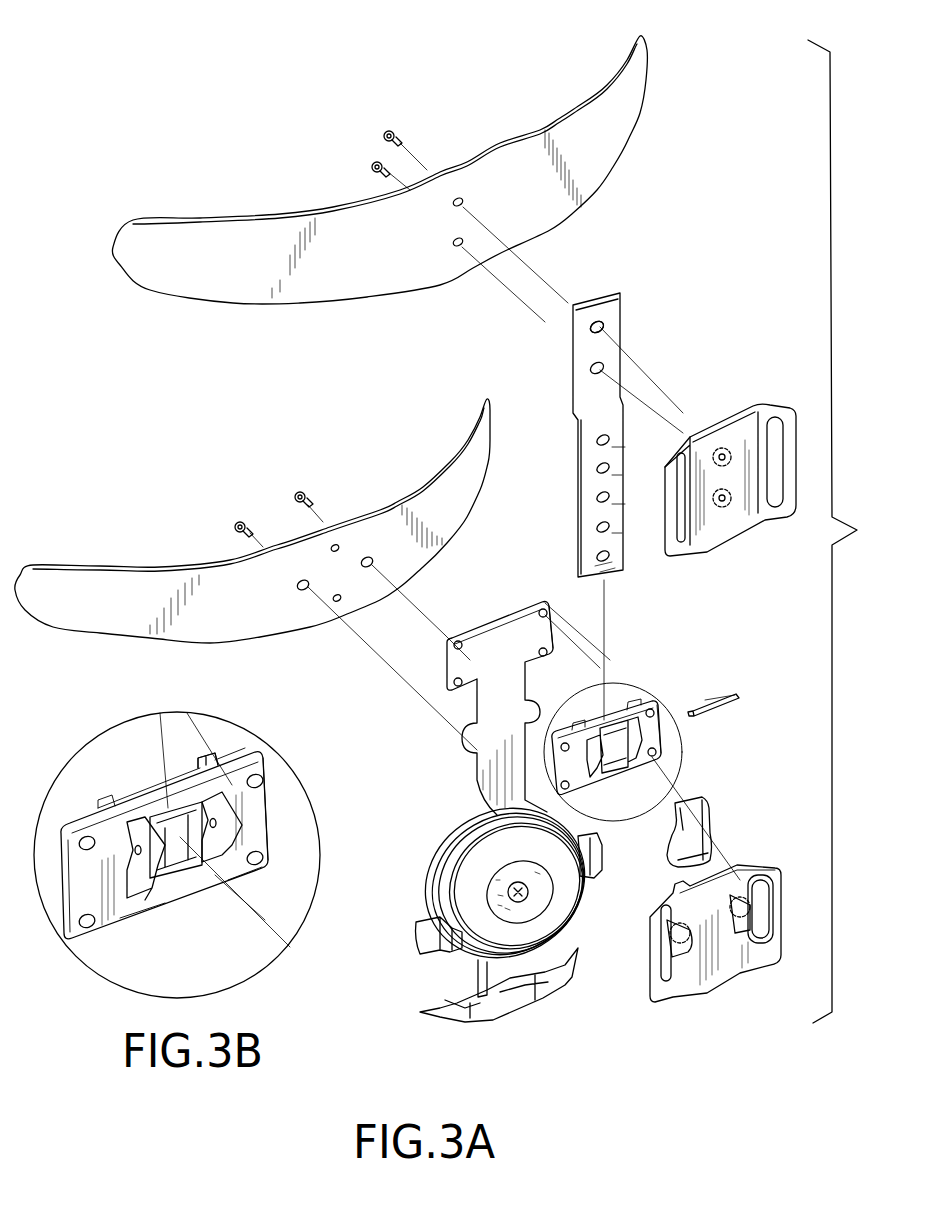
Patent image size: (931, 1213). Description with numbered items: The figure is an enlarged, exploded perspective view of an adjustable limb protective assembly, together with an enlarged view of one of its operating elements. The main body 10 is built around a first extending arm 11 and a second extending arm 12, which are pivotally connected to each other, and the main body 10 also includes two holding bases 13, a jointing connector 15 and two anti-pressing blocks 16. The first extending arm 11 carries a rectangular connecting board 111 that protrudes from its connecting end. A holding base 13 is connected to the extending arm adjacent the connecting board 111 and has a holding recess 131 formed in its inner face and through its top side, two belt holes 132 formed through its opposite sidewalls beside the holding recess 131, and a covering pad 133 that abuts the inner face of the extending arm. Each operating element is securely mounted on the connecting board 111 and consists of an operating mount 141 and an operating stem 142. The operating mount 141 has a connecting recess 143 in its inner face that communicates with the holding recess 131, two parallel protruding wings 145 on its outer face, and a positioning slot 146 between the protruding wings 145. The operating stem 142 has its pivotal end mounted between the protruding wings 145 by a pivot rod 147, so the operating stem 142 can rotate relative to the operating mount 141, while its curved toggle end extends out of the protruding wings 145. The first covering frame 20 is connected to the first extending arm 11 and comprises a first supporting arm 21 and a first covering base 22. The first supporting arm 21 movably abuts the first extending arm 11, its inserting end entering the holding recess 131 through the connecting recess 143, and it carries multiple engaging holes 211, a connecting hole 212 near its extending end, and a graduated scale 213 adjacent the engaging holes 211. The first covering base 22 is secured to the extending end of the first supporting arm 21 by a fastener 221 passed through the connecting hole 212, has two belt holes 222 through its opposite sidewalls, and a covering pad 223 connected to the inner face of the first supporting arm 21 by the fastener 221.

In FIG. 3A, the main body 10 is at (476, 889).
In FIG. 3A, the first extending arm 11 is at (476, 696).
In FIG. 3A, the second extending arm 12 is at (517, 973).
In FIG. 3A, the holding base 13 is at (731, 917).
In FIG. 3A, the jointing connector 15 is at (466, 969).
In FIG. 3A, the anti-pressing block 16 is at (437, 920).
In FIG. 3A, the first covering frame 20 is at (729, 231).
In FIG. 3A, the first supporting arm 21 is at (639, 342).
In FIG. 3A, the first covering base 22 is at (717, 567).
In FIG. 3A, the connecting board 111 is at (510, 623).
In FIG. 3A, the holding recess 131 is at (720, 863).
In FIG. 3A, the belt hole 132 is at (760, 900).
In FIG. 3A, the covering pad 133 is at (440, 487).
In FIG. 3A, the operating mount 141 is at (606, 747).
In FIG. 3B, the operating mount 141 is at (291, 773).
In FIG. 3A, the operating stem 142 is at (698, 797).
In FIG. 3B, the connecting recess 143 is at (200, 765).
In FIG. 3B, the protruding wing 145 is at (230, 823).
In FIG. 3B, the positioning slot 146 is at (170, 823).
In FIG. 3A, the pivot rod 147 is at (717, 700).
In FIG. 3A, the engaging hole 211 is at (597, 440).
In FIG. 3A, the connecting hole 212 is at (598, 327).
In FIG. 3A, the graduated scale 213 is at (617, 492).
In FIG. 3A, the fastener 221 is at (382, 134).
In FIG. 3A, the belt hole 222 is at (770, 482).
In FIG. 3A, the covering pad 223 is at (583, 117).